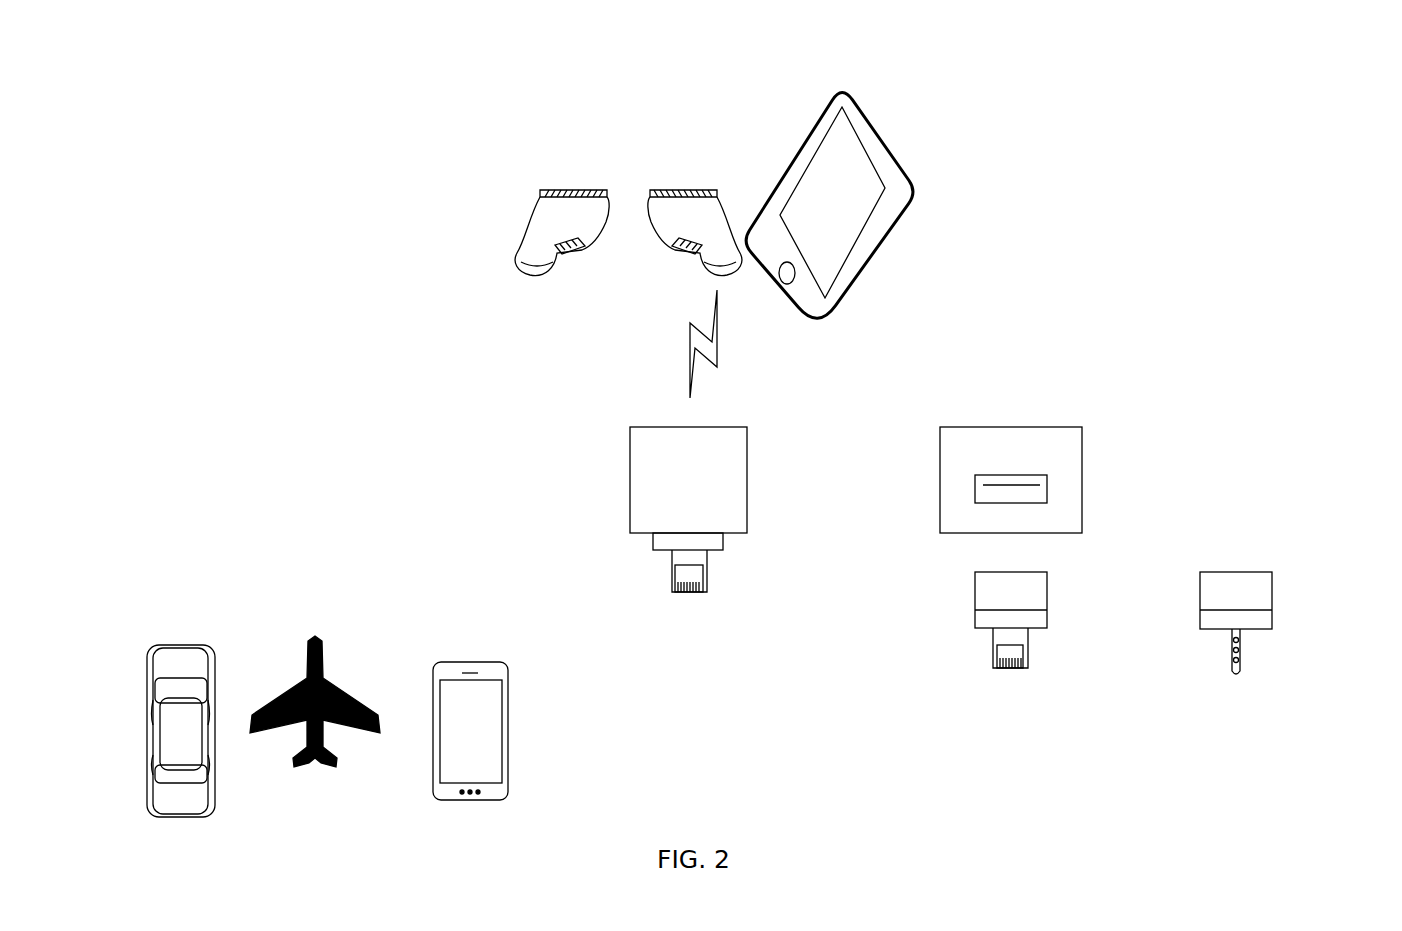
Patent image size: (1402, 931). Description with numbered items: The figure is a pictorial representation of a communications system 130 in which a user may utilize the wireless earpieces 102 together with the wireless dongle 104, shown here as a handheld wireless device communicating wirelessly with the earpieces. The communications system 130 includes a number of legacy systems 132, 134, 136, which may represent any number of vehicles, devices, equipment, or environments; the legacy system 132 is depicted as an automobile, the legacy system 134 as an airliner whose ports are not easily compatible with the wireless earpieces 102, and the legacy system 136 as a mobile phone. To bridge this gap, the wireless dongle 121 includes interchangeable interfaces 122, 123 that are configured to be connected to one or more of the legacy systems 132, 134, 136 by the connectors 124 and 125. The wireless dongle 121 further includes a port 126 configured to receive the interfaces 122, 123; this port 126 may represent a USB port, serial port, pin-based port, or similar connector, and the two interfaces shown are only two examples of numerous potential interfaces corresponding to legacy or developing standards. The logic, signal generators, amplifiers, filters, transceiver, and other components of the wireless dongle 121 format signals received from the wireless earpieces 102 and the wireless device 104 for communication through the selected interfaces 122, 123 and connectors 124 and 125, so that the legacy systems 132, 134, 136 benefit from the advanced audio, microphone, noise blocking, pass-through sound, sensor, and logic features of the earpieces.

The communications system 130 is at (692, 46).
The wireless earpieces 102 is at (650, 187).
The wireless dongle 104 is at (844, 91).
The wireless dongle 121 is at (630, 487).
The interface 122 is at (1262, 588).
The interface 123 is at (723, 547).
The connector 124 is at (1240, 650).
The connector 125 is at (672, 580).
The port 126 is at (1043, 490).
The legacy system 132 is at (182, 653).
The legacy system 134 is at (323, 647).
The legacy system 136 is at (482, 672).